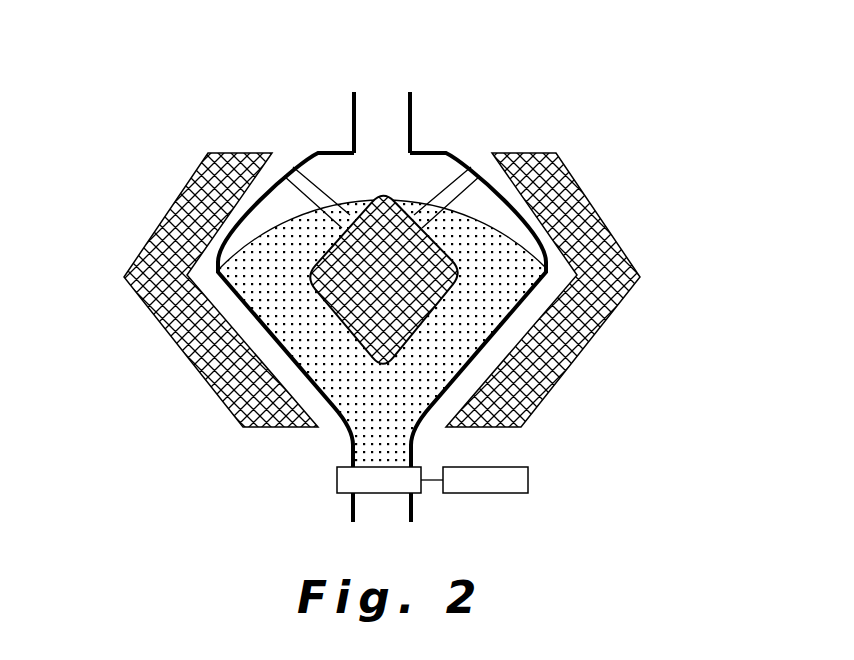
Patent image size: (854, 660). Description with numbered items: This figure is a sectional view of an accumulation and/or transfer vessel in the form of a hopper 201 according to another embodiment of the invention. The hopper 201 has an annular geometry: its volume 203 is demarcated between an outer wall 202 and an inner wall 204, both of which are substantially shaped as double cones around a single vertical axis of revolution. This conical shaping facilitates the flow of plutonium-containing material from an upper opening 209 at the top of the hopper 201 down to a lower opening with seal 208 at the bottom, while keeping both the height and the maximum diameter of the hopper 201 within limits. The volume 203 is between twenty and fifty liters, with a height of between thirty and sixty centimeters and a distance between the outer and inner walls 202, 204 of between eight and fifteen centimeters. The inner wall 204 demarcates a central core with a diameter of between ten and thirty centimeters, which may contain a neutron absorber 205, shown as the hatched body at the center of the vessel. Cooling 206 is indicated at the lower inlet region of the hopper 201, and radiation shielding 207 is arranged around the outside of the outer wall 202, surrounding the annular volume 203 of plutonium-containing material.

The hopper 201 is at (480, 153).
The outer wall 202 is at (500, 192).
The volume 203 is at (485, 250).
The inner wall 204 is at (330, 243).
The neutron absorber 205 is at (363, 325).
The cooling 206 is at (332, 425).
The radiation shielding 207 is at (500, 410).
The lower opening with seal 208 is at (397, 480).
The upper opening 209 is at (382, 112).